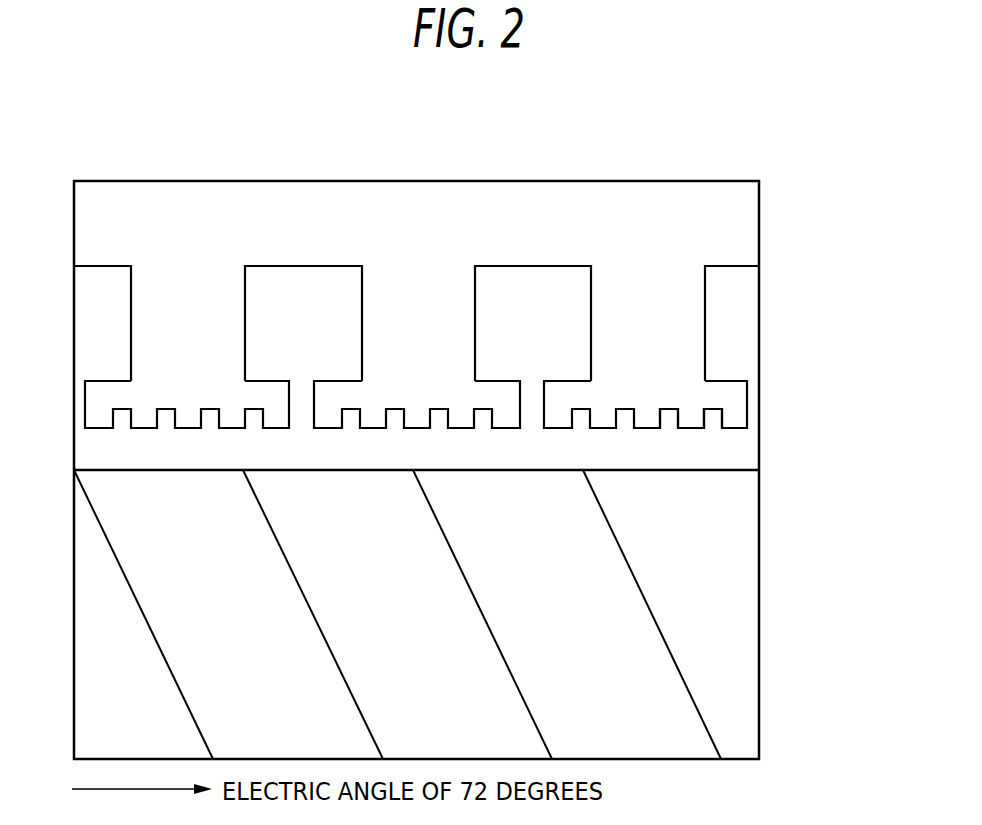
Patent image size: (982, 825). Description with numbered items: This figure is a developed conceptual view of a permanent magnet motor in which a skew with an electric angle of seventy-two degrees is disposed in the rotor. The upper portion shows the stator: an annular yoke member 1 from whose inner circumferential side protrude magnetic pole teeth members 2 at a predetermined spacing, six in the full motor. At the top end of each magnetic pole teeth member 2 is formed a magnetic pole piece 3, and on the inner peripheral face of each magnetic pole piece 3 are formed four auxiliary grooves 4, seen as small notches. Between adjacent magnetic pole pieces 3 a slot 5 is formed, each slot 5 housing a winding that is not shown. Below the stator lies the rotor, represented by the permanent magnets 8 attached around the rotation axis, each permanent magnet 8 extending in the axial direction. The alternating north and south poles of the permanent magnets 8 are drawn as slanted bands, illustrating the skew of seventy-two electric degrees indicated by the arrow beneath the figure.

The annular yoke member 1 is at (725, 203).
The magnetic pole teeth member 2 is at (684, 312).
The magnetic pole piece 3 is at (728, 397).
The auxiliary groove 4 is at (712, 422).
The slot 5 is at (530, 423).
The permanent magnet 8 is at (718, 705).